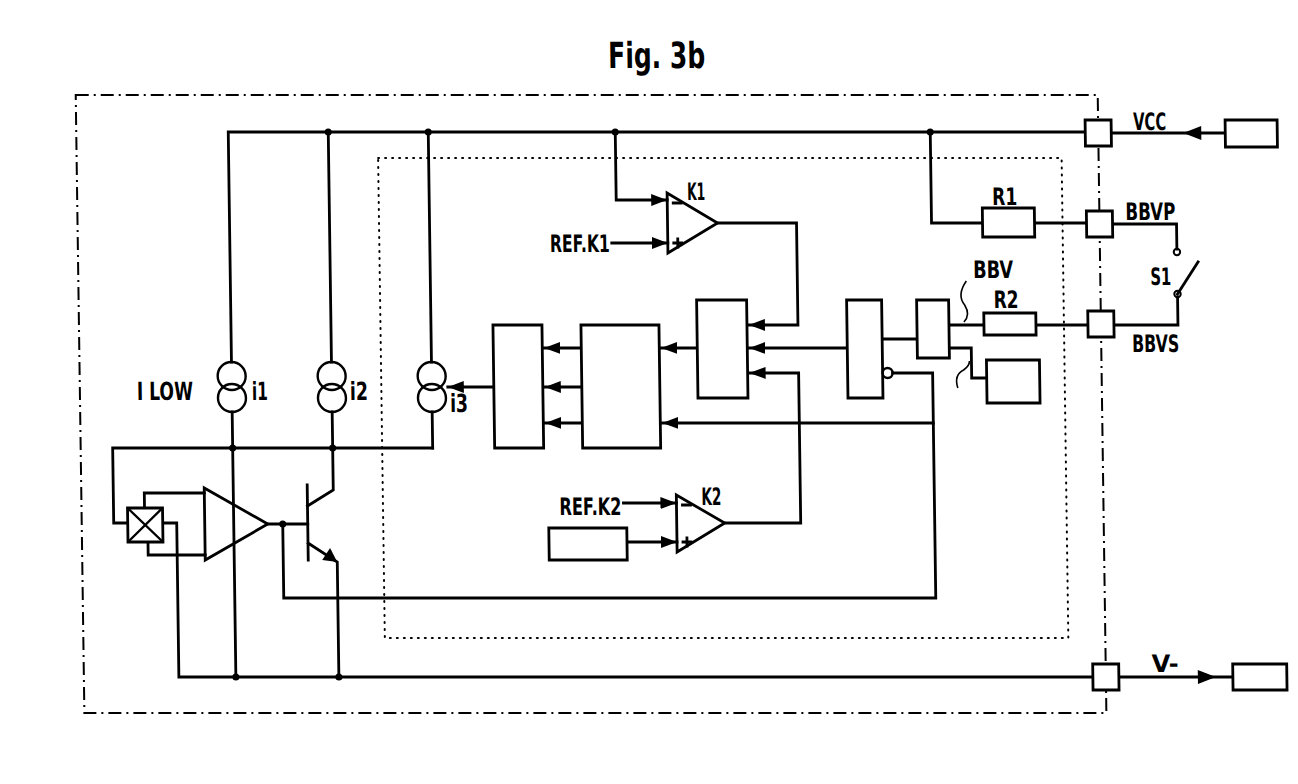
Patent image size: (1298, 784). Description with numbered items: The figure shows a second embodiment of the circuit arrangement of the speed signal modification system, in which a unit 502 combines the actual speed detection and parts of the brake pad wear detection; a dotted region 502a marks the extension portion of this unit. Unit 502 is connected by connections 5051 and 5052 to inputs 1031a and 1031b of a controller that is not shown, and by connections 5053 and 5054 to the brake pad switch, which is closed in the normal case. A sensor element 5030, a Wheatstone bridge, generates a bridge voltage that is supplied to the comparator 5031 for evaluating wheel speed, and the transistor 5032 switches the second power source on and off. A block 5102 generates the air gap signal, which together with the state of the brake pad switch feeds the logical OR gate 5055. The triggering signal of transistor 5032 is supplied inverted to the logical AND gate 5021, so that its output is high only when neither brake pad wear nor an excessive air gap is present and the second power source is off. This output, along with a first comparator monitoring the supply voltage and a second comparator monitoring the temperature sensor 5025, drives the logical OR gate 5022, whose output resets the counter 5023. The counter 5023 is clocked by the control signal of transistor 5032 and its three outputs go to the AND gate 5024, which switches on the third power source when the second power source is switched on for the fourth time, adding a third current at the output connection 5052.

The unit 502 is at (138, 95).
The LS-BBV extension circuit 502a is at (392, 158).
The connection 5051 is at (1108, 120).
The connection 5052 is at (1110, 665).
The connection 5053 is at (1105, 213).
The connection 5054 is at (1105, 337).
The input 1031a is at (1250, 120).
The input 1031b is at (1258, 664).
The logical AND gate 5021 is at (864, 300).
The logical OR gate 5022 is at (728, 305).
The counter 5023 is at (632, 325).
The logical AND gate 5024 is at (505, 325).
The temperature sensor 5025 is at (547, 541).
The sensor element 5030 is at (140, 545).
The comparator 5031 is at (245, 530).
The transistor 5032 is at (304, 492).
The logical OR gate 5055 is at (928, 300).
The block 5102 is at (1007, 396).